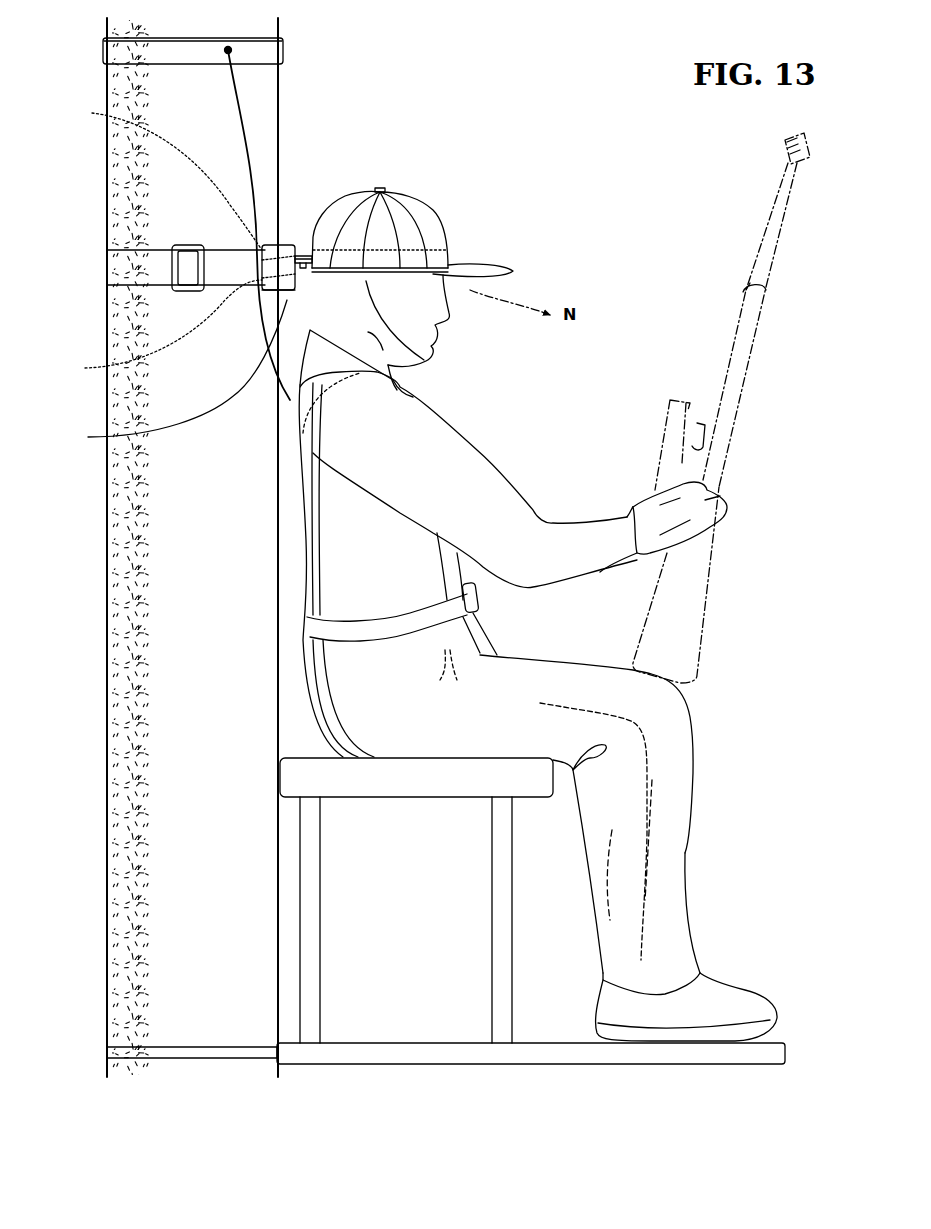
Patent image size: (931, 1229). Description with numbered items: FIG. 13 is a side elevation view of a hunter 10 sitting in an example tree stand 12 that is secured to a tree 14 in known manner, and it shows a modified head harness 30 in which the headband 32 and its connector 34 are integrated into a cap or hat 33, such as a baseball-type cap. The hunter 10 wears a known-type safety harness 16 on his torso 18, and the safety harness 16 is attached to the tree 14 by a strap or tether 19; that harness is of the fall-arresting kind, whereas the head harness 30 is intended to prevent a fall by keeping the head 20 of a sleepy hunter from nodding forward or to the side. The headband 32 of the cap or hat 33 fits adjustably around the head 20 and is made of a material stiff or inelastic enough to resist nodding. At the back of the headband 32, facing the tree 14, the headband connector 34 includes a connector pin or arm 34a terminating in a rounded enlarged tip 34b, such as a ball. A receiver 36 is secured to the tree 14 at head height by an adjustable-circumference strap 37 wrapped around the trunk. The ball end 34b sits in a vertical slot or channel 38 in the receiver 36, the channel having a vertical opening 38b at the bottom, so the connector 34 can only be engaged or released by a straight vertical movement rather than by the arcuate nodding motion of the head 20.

The hunter 10 is at (510, 430).
The tree stand 12 is at (416, 1069).
The tree 14 is at (130, 510).
The safety harness 16 is at (322, 612).
The torso 18 is at (365, 548).
The strap or tether 19 is at (245, 107).
The head 20 is at (415, 596).
The head harness 30 is at (300, 226).
The headband 32 is at (367, 258).
The cap or hat 33 is at (412, 214).
The headband connector 34 is at (307, 249).
The connector pin or arm 34a is at (287, 293).
The rounded enlarged tip 34b is at (156, 175).
The receiver 36 is at (284, 242).
The adjustable-circumference strap 37 is at (122, 268).
The vertical slot or channel 38 is at (161, 328).
The vertical opening 38b is at (167, 373).